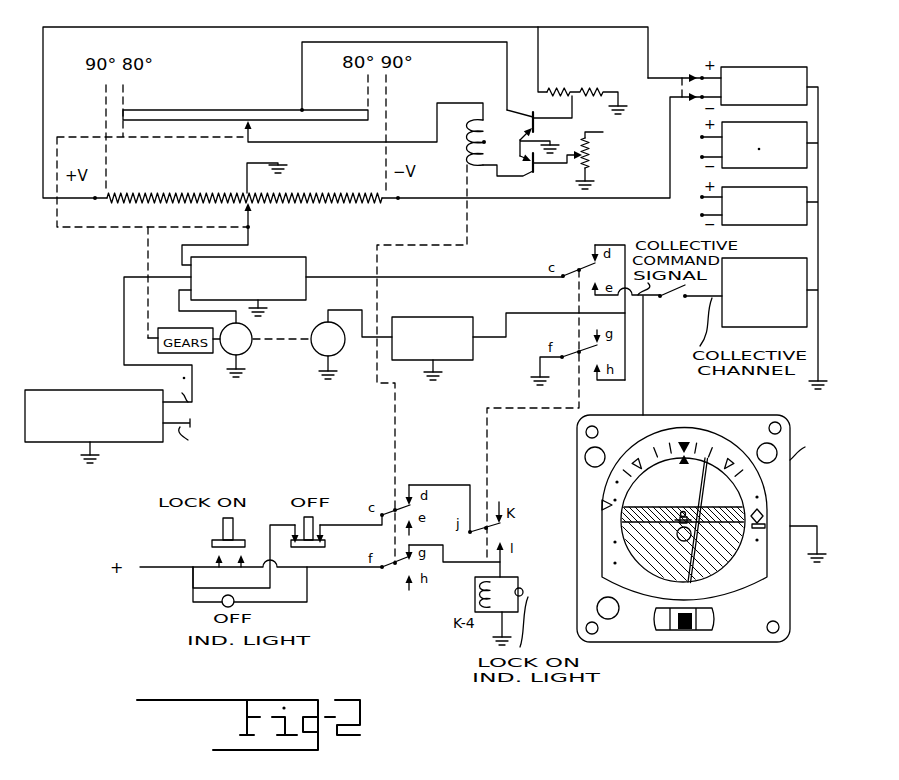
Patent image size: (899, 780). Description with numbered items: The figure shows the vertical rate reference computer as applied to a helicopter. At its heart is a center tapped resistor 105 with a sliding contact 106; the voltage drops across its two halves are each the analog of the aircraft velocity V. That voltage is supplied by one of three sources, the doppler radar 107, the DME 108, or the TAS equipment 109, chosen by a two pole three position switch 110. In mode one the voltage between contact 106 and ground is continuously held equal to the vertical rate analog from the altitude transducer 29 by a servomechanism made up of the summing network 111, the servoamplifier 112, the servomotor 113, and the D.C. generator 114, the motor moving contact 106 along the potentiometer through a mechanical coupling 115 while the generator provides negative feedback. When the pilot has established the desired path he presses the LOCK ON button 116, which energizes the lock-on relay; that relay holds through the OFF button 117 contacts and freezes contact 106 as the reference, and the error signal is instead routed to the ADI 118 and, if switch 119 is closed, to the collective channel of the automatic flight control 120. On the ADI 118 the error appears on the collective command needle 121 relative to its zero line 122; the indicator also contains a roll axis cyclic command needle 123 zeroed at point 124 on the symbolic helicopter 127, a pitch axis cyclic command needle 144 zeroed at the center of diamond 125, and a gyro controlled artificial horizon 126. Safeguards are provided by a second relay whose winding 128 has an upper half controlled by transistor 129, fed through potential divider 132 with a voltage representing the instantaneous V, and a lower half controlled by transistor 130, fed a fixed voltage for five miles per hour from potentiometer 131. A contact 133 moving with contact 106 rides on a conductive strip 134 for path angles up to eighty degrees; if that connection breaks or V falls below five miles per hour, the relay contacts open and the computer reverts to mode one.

The altitude transducer 29 is at (90, 390).
The center tapped resistor 105 is at (185, 181).
The sliding contact 106 is at (257, 208).
The doppler radar 107 is at (772, 66).
The DME 108 is at (785, 123).
The TAS equipment 109 is at (785, 186).
The two pole three position switch 110 is at (682, 63).
The summing network 111 is at (282, 256).
The servoamplifier 112 is at (447, 316).
The servomotor 113 is at (313, 330).
The D.C. generator 114 is at (250, 353).
The mechanical coupling 115 is at (148, 256).
The LOCK ON button 116 is at (222, 525).
The OFF button 117 is at (302, 520).
The ADI 118 is at (577, 476).
The switch 119 is at (672, 298).
The automatic flight control 120 is at (787, 245).
The collective command needle 121 is at (600, 505).
The line 122 is at (600, 523).
The roll axis cyclic command needle 123 is at (703, 478).
The point 124 is at (687, 510).
The diamond 125 is at (765, 517).
The artificial horizon 126 is at (732, 508).
The symbolic helicopter 127 is at (678, 540).
The winding 128 is at (462, 136).
The transistor 129 is at (534, 122).
The transistor 130 is at (536, 171).
The potentiometer 131 is at (575, 152).
The potential divider 132 is at (565, 90).
The contact 133 is at (256, 126).
The conductive strip 134 is at (204, 110).
The pitch axis cyclic command needle 144 is at (765, 526).